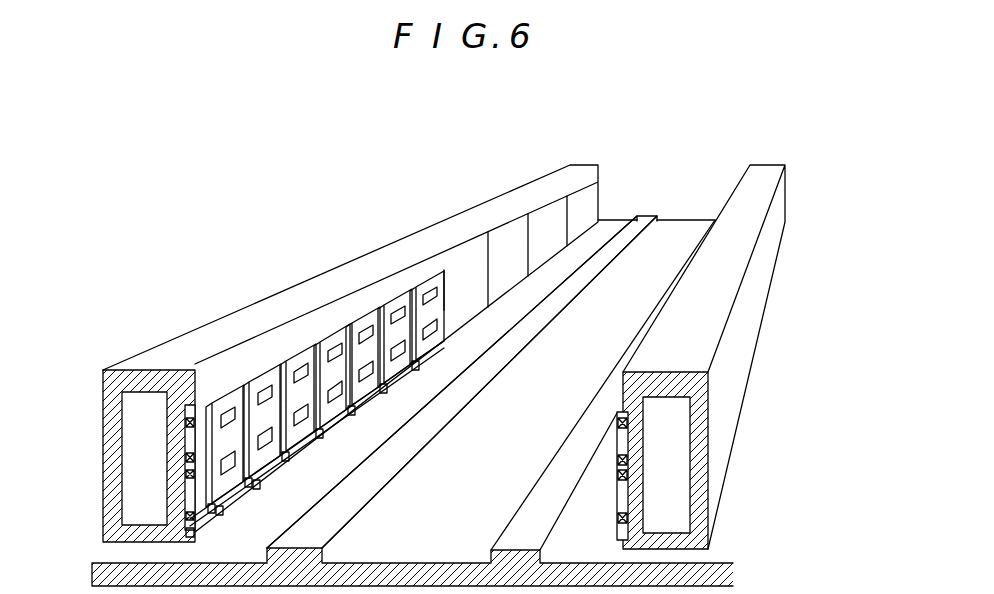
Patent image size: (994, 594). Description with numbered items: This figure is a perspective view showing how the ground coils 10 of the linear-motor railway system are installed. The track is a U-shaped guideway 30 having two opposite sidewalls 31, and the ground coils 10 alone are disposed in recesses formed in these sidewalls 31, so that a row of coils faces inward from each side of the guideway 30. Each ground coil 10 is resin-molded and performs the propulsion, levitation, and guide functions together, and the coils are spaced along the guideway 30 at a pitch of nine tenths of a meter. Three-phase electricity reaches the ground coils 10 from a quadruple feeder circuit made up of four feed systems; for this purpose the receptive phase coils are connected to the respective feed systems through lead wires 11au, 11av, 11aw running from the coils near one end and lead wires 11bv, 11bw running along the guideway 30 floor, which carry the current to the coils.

The U-shaped guideway 30 is at (665, 172).
The sidewall 31 is at (507, 197).
The ground coil 10 is at (208, 378).
The lead wire 11au is at (188, 539).
The lead wire 11av is at (222, 516).
The lead wire 11aw is at (258, 490).
The lead wire 11bv is at (310, 432).
The lead wire 11bw is at (355, 408).